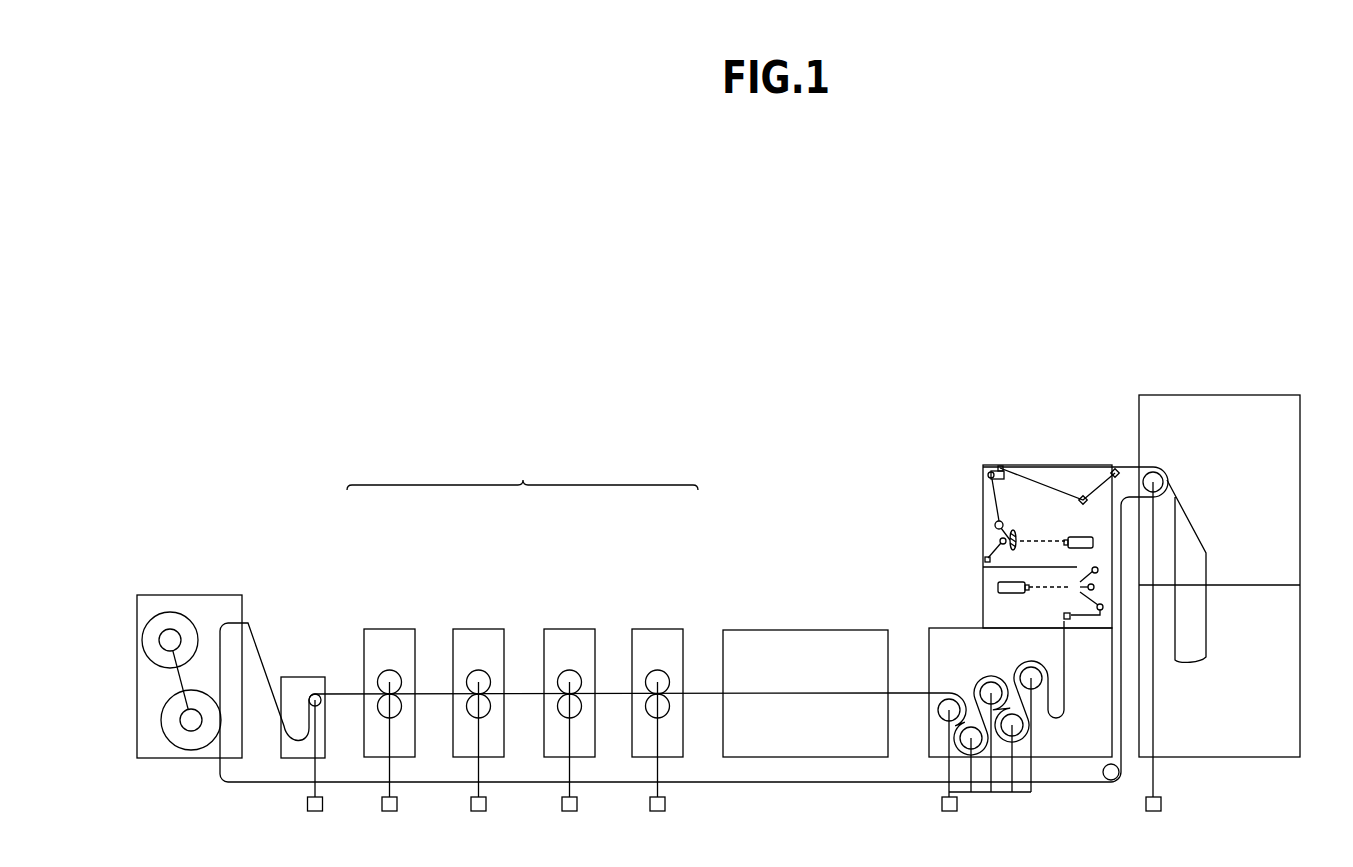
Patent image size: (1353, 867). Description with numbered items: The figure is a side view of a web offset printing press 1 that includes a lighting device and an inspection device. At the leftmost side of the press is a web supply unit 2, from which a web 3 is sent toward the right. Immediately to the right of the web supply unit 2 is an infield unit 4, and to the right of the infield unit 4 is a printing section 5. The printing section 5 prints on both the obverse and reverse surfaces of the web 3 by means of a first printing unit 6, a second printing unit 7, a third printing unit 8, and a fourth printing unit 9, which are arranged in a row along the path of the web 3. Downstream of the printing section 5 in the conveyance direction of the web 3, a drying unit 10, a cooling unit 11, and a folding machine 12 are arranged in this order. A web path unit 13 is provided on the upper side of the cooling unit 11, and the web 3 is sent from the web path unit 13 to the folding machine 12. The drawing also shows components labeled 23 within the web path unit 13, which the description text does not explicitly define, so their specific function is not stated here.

The web offset printing press 1 is at (211, 344).
The web supply unit 2 is at (193, 595).
The web 3 is at (268, 652).
The infield unit 4 is at (303, 677).
The printing section 5 is at (522, 467).
The first printing unit 6 is at (389, 629).
The second printing unit 7 is at (478, 629).
The third printing unit 8 is at (565, 629).
The fourth printing unit 9 is at (655, 629).
The drying unit 10 is at (818, 630).
The cooling unit 11 is at (960, 628).
The folding machine 12 is at (1192, 395).
The web path unit 13 is at (1016, 479).
The cutter 23 is at (1005, 526).